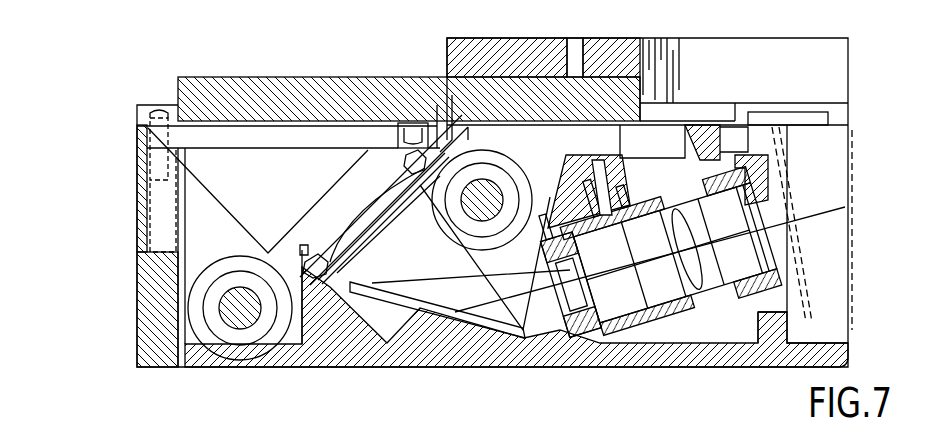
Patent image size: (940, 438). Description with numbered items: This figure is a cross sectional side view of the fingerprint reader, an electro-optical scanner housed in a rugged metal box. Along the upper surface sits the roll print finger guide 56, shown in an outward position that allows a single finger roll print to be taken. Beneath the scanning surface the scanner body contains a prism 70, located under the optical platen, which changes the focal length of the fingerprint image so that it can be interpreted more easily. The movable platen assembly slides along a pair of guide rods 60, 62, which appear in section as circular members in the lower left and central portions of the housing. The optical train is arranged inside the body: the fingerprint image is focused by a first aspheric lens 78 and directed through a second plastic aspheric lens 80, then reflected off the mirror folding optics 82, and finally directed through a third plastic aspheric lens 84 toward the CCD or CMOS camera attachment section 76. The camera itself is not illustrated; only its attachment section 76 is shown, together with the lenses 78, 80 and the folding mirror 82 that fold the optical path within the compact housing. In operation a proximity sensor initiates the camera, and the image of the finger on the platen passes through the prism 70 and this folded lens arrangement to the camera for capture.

The roll print finger guide 56 is at (260, 87).
The guide rod 60 is at (240, 318).
The guide rod 62 is at (482, 208).
The prism 70 is at (222, 195).
The CCD or CMOS camera attachment section 76 is at (712, 275).
The first aspheric lens 78 is at (700, 285).
The second plastic aspheric lens 80 is at (575, 327).
The mirror folding optics 82 is at (445, 310).
The third plastic aspheric lens 84 is at (336, 250).